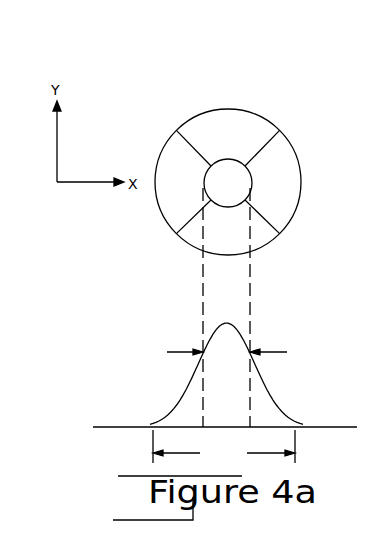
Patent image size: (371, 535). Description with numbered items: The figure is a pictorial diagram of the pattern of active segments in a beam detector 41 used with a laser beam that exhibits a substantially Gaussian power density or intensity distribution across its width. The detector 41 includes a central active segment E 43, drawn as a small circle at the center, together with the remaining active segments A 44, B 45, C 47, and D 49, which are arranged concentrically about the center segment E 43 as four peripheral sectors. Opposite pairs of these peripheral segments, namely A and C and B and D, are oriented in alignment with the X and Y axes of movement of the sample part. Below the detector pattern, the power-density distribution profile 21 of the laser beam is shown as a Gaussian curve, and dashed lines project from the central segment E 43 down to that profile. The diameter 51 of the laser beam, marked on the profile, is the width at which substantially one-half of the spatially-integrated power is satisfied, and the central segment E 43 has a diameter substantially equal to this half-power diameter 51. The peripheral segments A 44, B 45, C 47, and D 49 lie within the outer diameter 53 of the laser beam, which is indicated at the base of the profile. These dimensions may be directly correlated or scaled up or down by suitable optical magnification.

The detector 41 is at (234, 84).
The central active segment E 43 is at (252, 173).
The active segment A 44 is at (256, 121).
The active segment B 45 is at (289, 194).
The active segment C 47 is at (182, 236).
The active segment D 49 is at (164, 151).
The power-density distribution profile 21 is at (272, 413).
The diameter of the laser beam at half power 51 is at (270, 350).
The outer diameter of the laser beam 53 is at (224, 449).